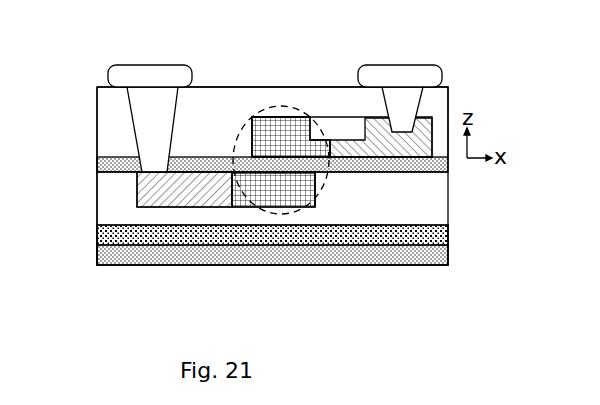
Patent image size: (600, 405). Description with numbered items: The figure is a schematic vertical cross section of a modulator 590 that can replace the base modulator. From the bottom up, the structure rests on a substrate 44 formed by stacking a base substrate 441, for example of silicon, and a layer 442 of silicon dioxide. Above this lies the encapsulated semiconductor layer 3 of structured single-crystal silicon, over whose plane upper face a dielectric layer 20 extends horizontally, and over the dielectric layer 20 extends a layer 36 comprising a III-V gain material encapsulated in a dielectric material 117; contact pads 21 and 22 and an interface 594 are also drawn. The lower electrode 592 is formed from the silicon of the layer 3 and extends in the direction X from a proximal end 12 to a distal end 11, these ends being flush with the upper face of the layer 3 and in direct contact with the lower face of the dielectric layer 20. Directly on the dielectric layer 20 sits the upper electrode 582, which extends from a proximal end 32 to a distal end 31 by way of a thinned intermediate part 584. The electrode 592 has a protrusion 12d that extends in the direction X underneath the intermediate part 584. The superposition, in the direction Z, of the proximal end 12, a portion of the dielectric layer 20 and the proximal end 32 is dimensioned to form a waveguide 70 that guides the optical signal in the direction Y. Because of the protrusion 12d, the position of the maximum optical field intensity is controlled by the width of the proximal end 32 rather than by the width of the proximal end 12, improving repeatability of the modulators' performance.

The modulator 590 is at (451, 56).
The dielectric material 117 is at (106, 106).
The dielectric layer 20 is at (97, 163).
The layer of dielectric material 442 is at (118, 229).
The base substrate 441 is at (118, 258).
The substrate 44 is at (38, 227).
The encapsulated semiconductor layer 3 is at (96, 174).
The layer comprising III-V gain material 36 is at (96, 90).
The distal end 11 is at (180, 200).
The proximal end 12 is at (280, 200).
The proximal end 32 is at (275, 127).
The interface 594 is at (229, 198).
The protrusion 12d is at (320, 202).
The distal end 31 is at (376, 134).
The thinned intermediate part 584 is at (336, 148).
The electrode 582 is at (348, 26).
The first contact pad 21 is at (155, 65).
The second contact pad 22 is at (410, 65).
The waveguide 70 is at (247, 118).
The electrode 592 is at (325, 308).